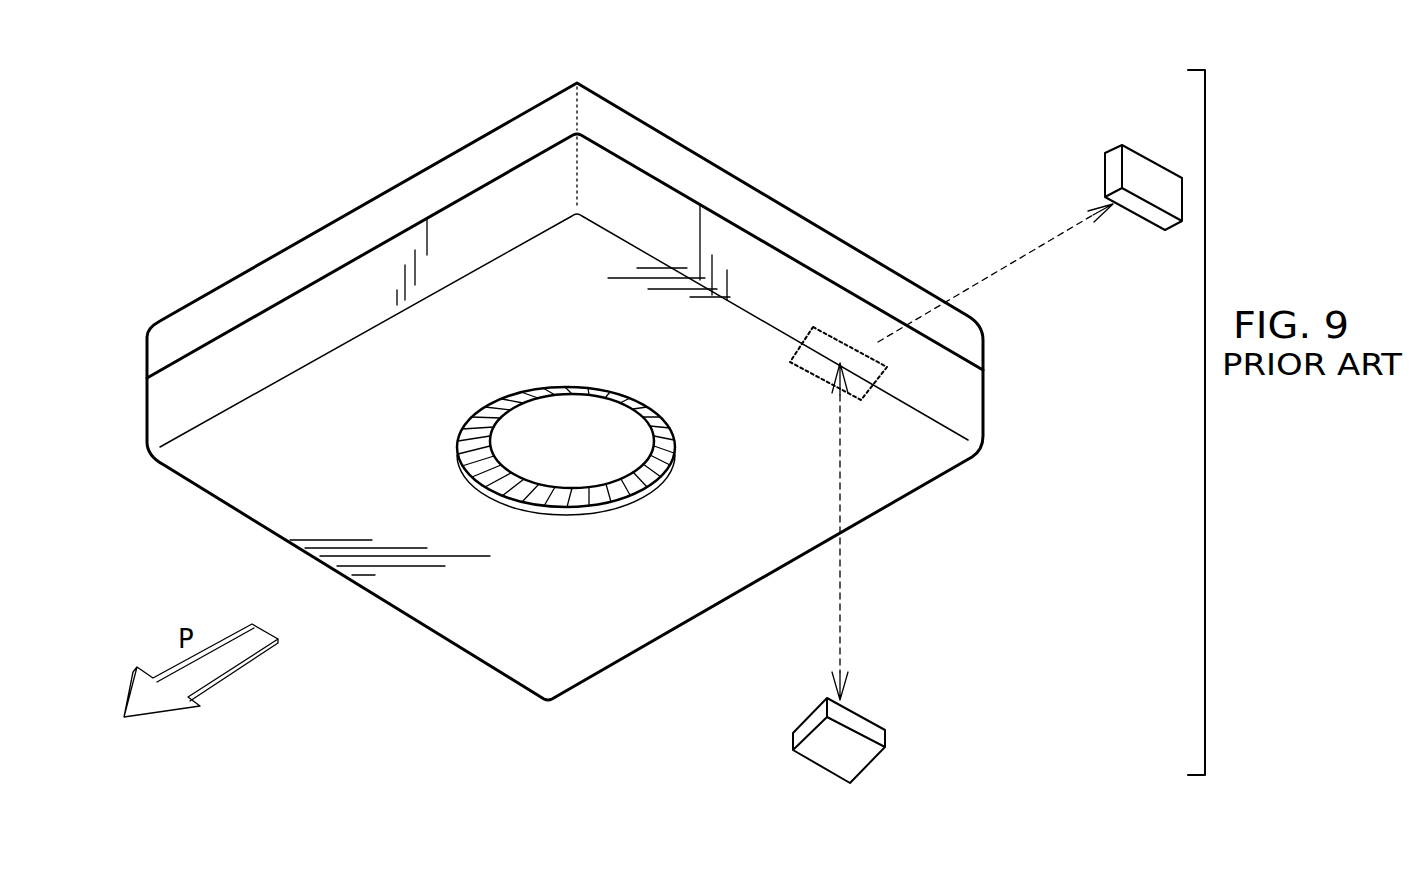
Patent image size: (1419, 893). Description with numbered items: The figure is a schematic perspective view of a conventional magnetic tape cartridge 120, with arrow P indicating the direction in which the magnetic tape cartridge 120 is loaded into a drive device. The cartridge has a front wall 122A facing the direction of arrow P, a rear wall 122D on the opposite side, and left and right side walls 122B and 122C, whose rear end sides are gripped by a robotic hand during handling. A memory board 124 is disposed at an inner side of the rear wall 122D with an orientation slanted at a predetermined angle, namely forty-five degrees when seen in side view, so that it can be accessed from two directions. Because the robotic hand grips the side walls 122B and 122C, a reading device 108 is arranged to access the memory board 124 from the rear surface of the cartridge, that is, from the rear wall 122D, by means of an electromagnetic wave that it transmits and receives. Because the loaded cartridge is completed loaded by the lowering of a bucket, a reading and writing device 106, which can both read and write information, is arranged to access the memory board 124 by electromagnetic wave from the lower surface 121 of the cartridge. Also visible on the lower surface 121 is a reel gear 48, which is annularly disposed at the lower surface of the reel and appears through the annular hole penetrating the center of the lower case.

The magnetic tape cartridge 120 is at (694, 115).
The lower surface 121 is at (571, 627).
The front wall 122A is at (352, 582).
The side wall 122B is at (303, 317).
The side wall 122C is at (860, 523).
The rear wall 122D is at (757, 262).
The memory board 124 is at (803, 347).
The reel gear 48 is at (640, 483).
The reading and writing device 106 is at (853, 762).
The reading device 108 is at (1113, 170).